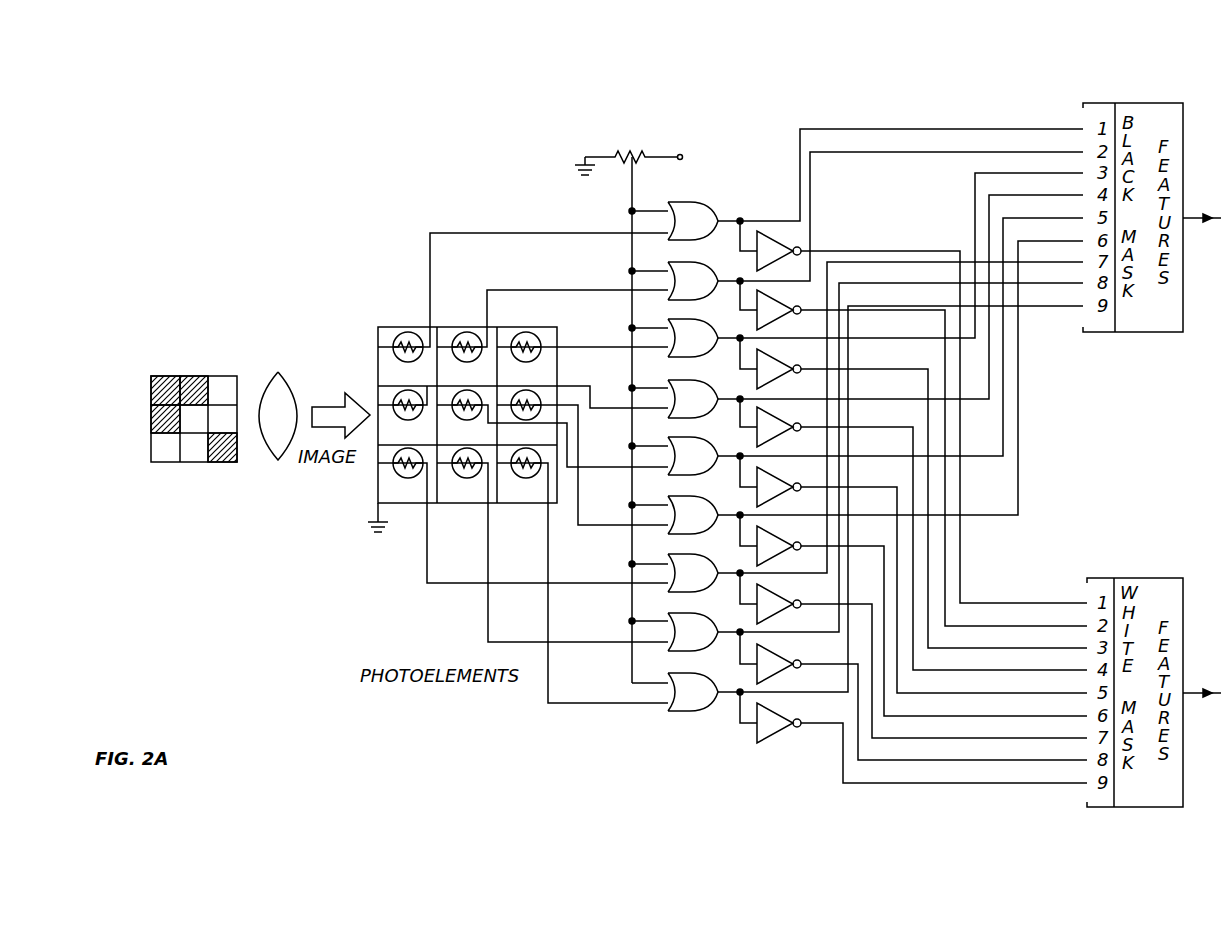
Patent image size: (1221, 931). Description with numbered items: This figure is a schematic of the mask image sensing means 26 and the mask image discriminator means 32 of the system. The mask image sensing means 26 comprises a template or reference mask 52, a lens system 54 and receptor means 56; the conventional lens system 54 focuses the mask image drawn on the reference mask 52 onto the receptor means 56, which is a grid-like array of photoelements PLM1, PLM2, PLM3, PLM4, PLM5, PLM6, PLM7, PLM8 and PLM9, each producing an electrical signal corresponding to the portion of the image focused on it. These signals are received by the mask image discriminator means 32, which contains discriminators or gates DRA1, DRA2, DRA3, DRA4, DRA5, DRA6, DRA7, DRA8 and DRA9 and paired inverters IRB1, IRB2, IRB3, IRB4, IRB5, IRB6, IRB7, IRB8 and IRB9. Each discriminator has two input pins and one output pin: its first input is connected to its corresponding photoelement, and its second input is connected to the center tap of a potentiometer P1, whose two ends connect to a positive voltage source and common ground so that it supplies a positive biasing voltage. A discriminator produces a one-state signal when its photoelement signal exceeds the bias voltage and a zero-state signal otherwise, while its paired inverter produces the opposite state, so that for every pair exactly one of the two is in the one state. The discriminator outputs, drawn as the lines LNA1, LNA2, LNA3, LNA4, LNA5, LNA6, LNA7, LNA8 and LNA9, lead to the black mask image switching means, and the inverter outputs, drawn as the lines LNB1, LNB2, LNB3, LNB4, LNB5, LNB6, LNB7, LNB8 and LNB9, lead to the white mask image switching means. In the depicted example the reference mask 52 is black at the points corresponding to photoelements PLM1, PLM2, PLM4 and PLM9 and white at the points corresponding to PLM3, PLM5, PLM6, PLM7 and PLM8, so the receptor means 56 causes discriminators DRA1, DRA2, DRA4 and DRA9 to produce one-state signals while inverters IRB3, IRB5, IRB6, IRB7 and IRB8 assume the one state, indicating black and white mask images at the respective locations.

The reference mask 52 is at (150, 410).
The lens system 54 is at (262, 385).
The receptor means 56 is at (368, 499).
The mask image sensing means 26 is at (347, 231).
The mask image discriminator means 32 is at (724, 114).
The potentiometer P1 is at (631, 146).
The photoelement PLM1 is at (395, 330).
The photoelement PLM2 is at (457, 330).
The photoelement PLM3 is at (506, 333).
The photoelement PLM4 is at (382, 398).
The photoelement PLM5 is at (449, 432).
The photoelement PLM6 is at (550, 388).
The photoelement PLM7 is at (385, 481).
The photoelement PLM8 is at (455, 493).
The photoelement PLM9 is at (516, 493).
The discriminator DRA1 is at (705, 203).
The discriminator DRA2 is at (661, 268).
The discriminator DRA3 is at (661, 341).
The discriminator DRA4 is at (661, 386).
The discriminator DRA5 is at (668, 442).
The discriminator DRA6 is at (661, 533).
The discriminator DRA7 is at (662, 577).
The discriminator DRA8 is at (665, 636).
The discriminator DRA9 is at (672, 712).
The inverter IRB1 is at (765, 232).
The inverter IRB2 is at (757, 297).
The inverter IRB3 is at (801, 362).
The inverter IRB4 is at (801, 420).
The inverter IRB5 is at (801, 480).
The inverter IRB6 is at (757, 550).
The inverter IRB7 is at (769, 616).
The inverter IRB8 is at (772, 655).
The inverter IRB9 is at (757, 731).
The black-feature line 1 LNA1 is at (835, 129).
The black-feature line 2 LNA2 is at (935, 150).
The black-feature line 3 LNA3 is at (975, 179).
The black-feature line 4 LNA4 is at (989, 204).
The black-feature line 5 LNA5 is at (1003, 227).
The black-feature line 6 LNA6 is at (1018, 250).
The black-feature line 7 LNA7 is at (1067, 262).
The black-feature line 8 LNA8 is at (1053, 283).
The black-feature line 9 LNA9 is at (1037, 306).
The white-feature line 1 LNB1 is at (960, 533).
The white-feature line 2 LNB2 is at (945, 557).
The white-feature line 3 LNB3 is at (928, 581).
The white-feature line 4 LNB4 is at (970, 670).
The white-feature line 5 LNB5 is at (1063, 693).
The white-feature line 6 LNB6 is at (1037, 716).
The white-feature line 7 LNB7 is at (1013, 738).
The white-feature line 8 LNB8 is at (961, 760).
The white-feature line 9 LNB9 is at (913, 783).